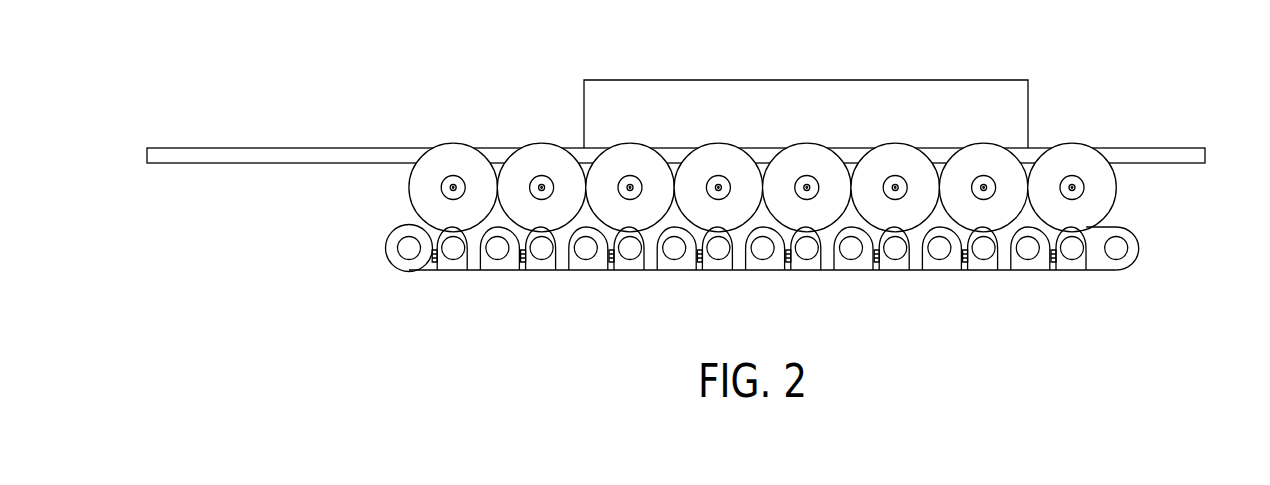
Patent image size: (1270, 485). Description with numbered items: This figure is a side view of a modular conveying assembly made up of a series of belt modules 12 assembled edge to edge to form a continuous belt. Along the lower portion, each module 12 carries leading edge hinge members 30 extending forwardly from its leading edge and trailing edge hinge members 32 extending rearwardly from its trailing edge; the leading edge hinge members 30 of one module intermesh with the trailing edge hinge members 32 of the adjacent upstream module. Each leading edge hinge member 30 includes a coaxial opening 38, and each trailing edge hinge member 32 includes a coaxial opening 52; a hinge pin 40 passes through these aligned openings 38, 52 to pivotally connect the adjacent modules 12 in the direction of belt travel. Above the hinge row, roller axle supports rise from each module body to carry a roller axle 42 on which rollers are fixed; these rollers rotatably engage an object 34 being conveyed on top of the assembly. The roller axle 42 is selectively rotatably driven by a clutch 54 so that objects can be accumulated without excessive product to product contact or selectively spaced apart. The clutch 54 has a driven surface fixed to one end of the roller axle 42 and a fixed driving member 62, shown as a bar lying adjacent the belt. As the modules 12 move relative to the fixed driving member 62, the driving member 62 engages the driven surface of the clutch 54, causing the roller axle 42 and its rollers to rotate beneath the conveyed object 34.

The belt module 12 is at (920, 262).
The leading edge hinge member 30 is at (1139, 246).
The trailing edge hinge member 32 is at (393, 263).
The object 34 is at (989, 80).
The coaxial opening 38 is at (1125, 256).
The hinge pin 40 is at (502, 246).
The roller axle 42 is at (1072, 184).
The coaxial opening 52 is at (410, 250).
The clutch 54 is at (829, 165).
The driving member 62 is at (1163, 148).